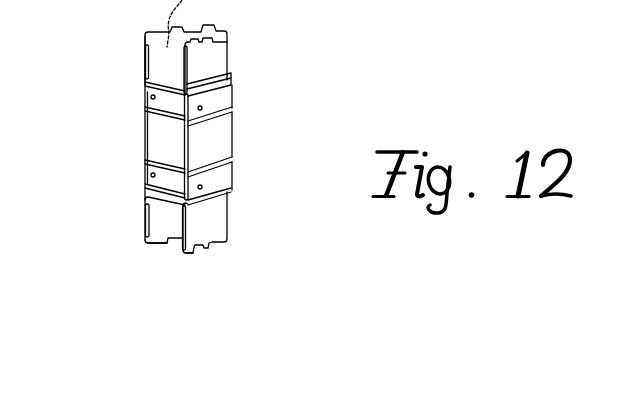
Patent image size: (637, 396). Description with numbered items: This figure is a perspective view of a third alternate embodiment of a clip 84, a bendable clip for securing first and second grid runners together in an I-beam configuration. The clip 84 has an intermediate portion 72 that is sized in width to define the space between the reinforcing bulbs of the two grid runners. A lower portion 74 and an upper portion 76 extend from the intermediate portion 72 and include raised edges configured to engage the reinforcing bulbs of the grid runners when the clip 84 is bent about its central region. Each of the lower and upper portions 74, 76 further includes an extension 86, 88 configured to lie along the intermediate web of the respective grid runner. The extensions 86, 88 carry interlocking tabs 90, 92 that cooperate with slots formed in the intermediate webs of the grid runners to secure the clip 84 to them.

The clip 84 is at (278, 127).
The extension 88 is at (227, 44).
The interlocking tab 92 is at (202, 77).
The upper portion 76 is at (147, 98).
The intermediate portion 72 is at (151, 128).
The lower portion 74 is at (147, 173).
The interlocking tab 90 is at (146, 59).
The extension 86 is at (164, 226).